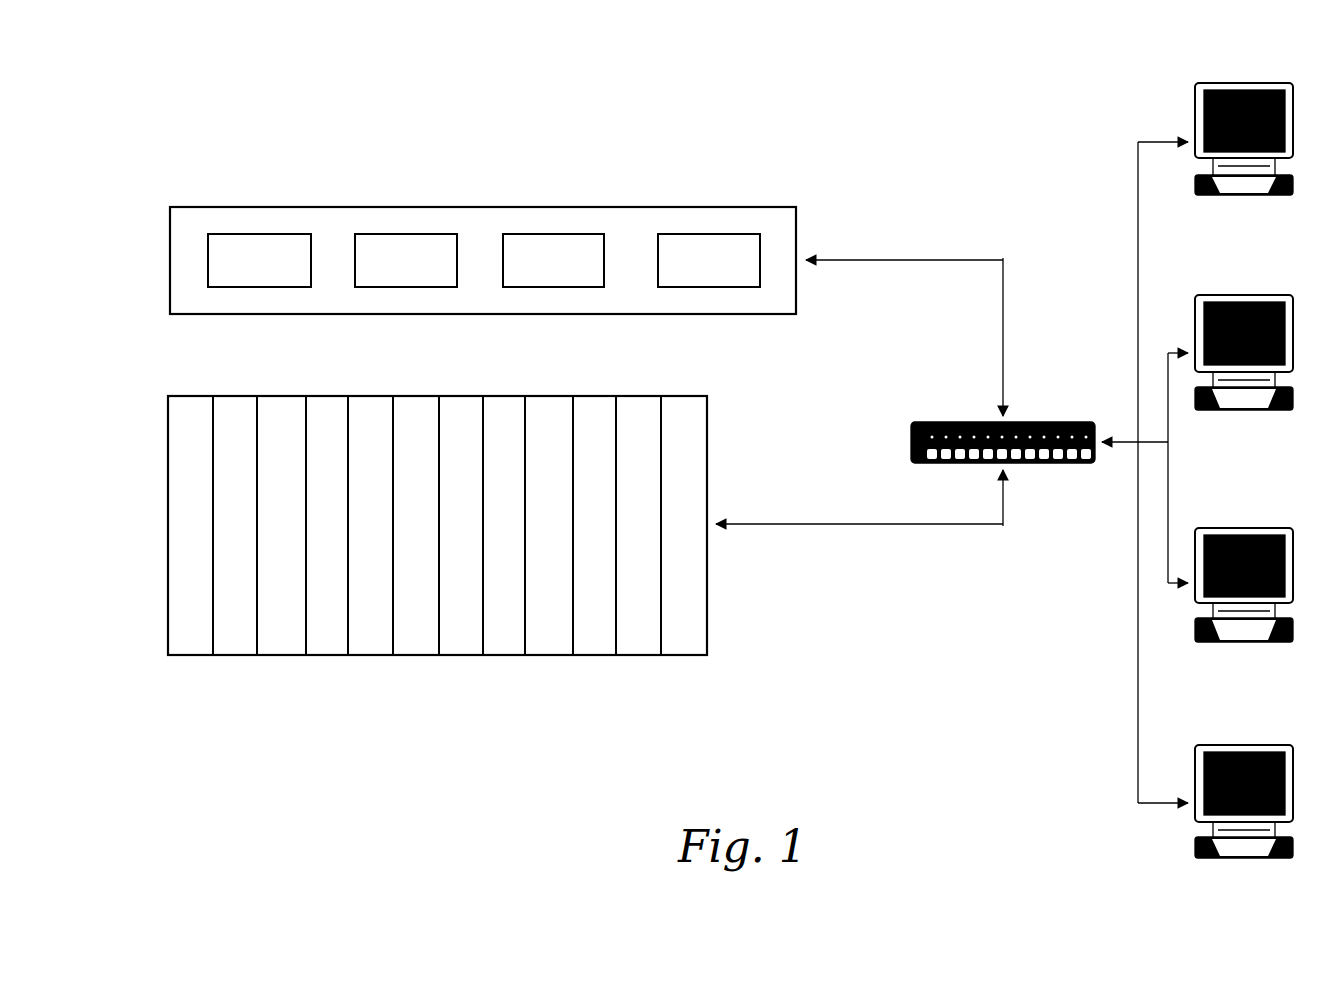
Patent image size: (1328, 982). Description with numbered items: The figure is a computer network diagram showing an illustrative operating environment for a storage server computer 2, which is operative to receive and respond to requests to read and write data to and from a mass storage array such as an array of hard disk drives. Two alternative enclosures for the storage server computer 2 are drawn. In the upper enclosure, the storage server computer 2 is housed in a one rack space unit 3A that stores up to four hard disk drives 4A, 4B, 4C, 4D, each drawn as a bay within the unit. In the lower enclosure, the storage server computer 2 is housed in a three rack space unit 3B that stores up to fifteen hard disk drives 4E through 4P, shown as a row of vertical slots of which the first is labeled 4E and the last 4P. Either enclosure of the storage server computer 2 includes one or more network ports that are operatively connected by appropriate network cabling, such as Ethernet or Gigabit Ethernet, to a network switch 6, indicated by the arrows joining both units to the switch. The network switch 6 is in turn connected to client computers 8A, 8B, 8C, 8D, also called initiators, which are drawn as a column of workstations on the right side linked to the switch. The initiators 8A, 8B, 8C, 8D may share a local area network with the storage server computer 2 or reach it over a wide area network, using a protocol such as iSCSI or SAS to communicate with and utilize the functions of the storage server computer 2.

The storage server computer 2 is at (671, 156).
The one rack space unit 3A is at (477, 232).
The three rack space unit 3B is at (437, 657).
The hard disk drive 4A is at (248, 243).
The hard disk drive 4B is at (390, 247).
The hard disk drive 4C is at (563, 244).
The hard disk drive 4D is at (725, 259).
The hard disk drive 4E is at (195, 645).
The hard disk drive 4P is at (684, 645).
The network switch 6 is at (1063, 465).
The client computer 8A is at (1240, 90).
The client computer 8B is at (1243, 298).
The client computer 8C is at (1230, 535).
The client computer 8D is at (1228, 752).